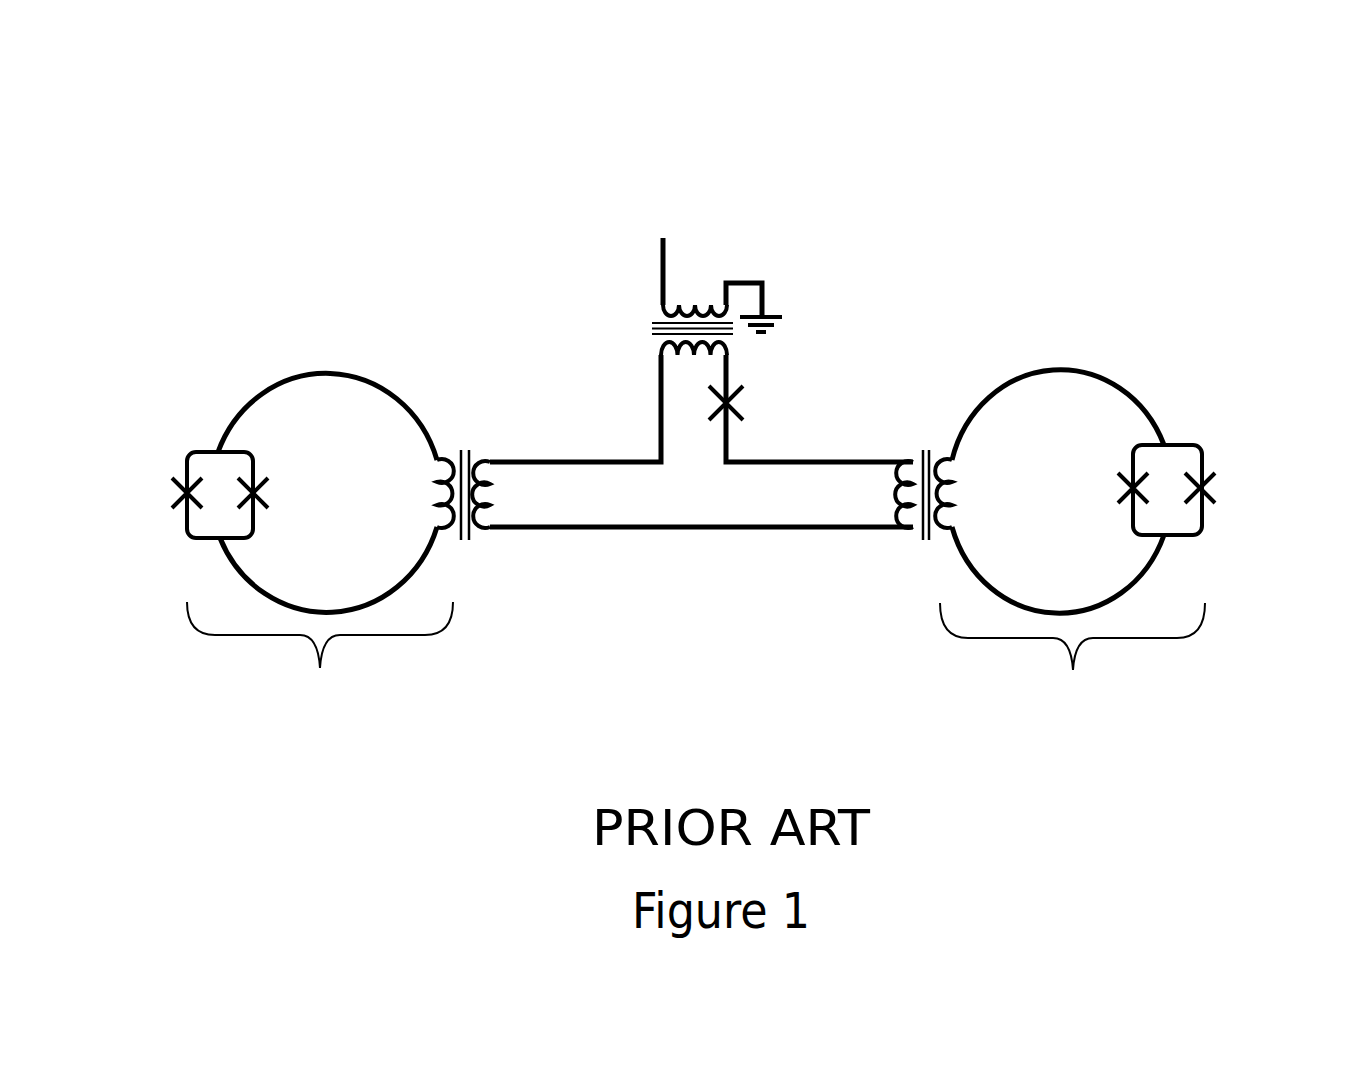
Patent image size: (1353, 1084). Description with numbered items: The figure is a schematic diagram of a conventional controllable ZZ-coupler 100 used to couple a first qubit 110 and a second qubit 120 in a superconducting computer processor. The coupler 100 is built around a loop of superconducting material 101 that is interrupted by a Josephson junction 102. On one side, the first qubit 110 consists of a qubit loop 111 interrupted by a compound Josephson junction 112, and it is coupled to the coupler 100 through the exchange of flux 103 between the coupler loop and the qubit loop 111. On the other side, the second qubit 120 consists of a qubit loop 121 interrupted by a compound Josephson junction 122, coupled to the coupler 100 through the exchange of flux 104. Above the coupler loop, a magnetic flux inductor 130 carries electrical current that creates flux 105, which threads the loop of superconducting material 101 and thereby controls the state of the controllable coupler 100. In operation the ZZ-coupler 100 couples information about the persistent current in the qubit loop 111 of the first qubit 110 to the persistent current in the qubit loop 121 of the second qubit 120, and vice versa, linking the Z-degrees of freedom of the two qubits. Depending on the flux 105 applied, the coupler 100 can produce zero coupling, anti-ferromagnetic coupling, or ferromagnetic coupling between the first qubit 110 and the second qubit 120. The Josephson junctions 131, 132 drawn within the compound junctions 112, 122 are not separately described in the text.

The controllable ZZ-coupler 100 is at (165, 131).
The loop of superconducting material 101 is at (667, 505).
The Josephson junction 102 is at (740, 405).
The exchange of flux 103 is at (461, 450).
The exchange of flux 104 is at (922, 537).
The flux 105 is at (650, 328).
The first qubit 110 is at (282, 498).
The qubit loop 111 is at (323, 383).
The compound Josephson junction 112 is at (207, 455).
The second qubit 120 is at (1107, 506).
The qubit loop 121 is at (1068, 388).
The compound Josephson junction 122 is at (1168, 462).
The magnetic flux inductor 130 is at (690, 303).
The Josephson junction of first qubit 131 is at (260, 491).
The Josephson junction of second qubit 132 is at (1120, 487).